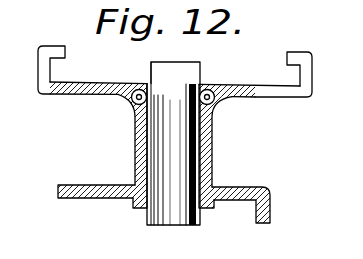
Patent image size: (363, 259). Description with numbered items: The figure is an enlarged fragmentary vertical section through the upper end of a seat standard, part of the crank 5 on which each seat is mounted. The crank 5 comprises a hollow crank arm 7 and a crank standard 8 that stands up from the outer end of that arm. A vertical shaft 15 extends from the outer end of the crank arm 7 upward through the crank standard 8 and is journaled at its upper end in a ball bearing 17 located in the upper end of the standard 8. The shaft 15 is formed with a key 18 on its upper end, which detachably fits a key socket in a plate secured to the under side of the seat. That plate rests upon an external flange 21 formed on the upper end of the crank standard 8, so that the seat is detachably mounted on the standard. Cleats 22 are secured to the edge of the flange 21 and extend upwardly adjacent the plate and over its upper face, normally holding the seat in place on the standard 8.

The crank 5 is at (248, 203).
The hollow crank arm 7 is at (60, 185).
The crank standard 8 is at (199, 159).
The vertical shaft 15 is at (165, 155).
The ball bearing 17 is at (134, 102).
The key 18 is at (151, 70).
The external flange 21 is at (256, 98).
The cleats 22 is at (52, 69).